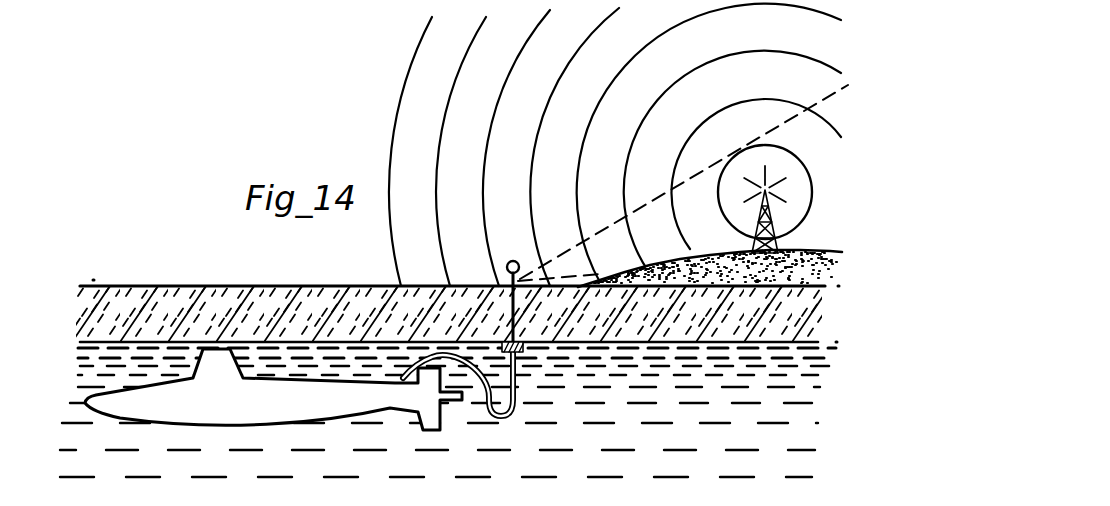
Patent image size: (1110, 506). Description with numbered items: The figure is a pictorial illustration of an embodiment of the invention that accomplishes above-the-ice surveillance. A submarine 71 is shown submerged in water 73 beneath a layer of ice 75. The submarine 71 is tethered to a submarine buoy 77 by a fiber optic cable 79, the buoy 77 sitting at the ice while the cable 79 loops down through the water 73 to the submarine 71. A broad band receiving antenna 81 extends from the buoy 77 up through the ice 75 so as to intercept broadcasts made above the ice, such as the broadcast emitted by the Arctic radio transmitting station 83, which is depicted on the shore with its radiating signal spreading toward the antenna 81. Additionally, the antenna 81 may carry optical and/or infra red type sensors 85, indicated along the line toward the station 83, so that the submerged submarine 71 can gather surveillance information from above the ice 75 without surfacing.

The submarine 71 is at (233, 411).
The water 73 is at (583, 431).
The layer of ice 75 is at (358, 332).
The submarine buoy 77 is at (521, 341).
The fiber optic cable 79 is at (478, 405).
The broad band receiving antenna 81 is at (511, 261).
The Arctic radio transmitting station 83 is at (778, 225).
The optical and/or infra red type sensors 85 is at (523, 277).